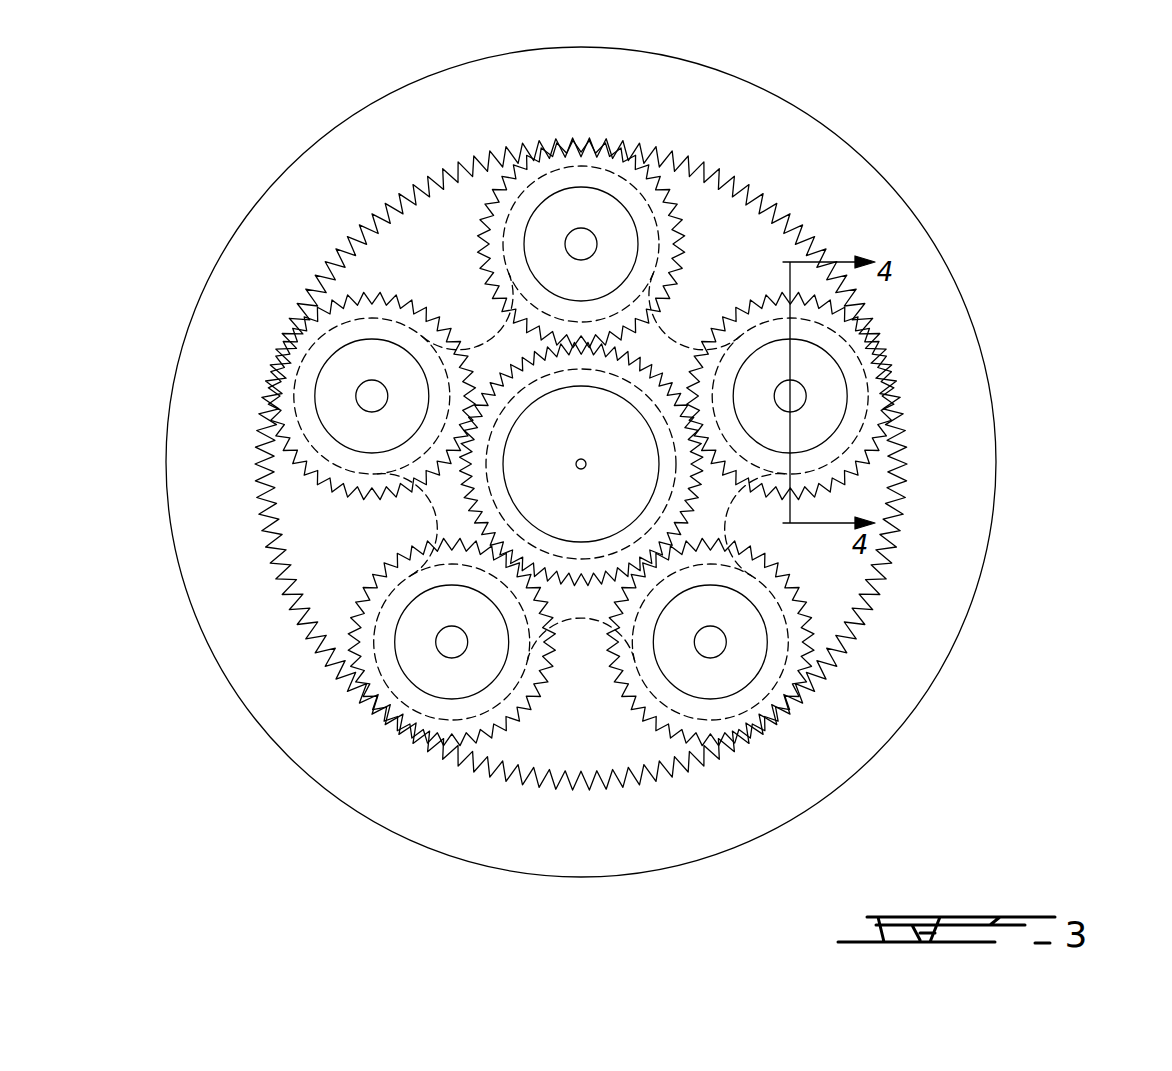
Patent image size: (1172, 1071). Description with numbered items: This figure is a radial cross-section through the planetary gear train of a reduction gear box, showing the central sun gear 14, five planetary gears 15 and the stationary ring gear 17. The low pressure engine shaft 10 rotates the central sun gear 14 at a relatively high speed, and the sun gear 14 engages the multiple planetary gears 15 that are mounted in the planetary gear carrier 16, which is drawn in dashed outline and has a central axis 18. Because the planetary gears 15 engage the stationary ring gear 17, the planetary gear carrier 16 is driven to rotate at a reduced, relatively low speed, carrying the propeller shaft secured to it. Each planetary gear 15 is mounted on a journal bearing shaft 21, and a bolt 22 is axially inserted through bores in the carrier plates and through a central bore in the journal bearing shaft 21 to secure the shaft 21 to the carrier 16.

The low pressure engine shaft 10 is at (553, 483).
The central sun gear 14 is at (500, 487).
The planetary gears 15 is at (601, 466).
The planetary gear carrier 16 is at (582, 615).
The stationary ring gear 17 is at (333, 165).
The central axis 18 is at (581, 464).
The journal bearing shaft 21 is at (680, 172).
The bolt 22 is at (753, 192).